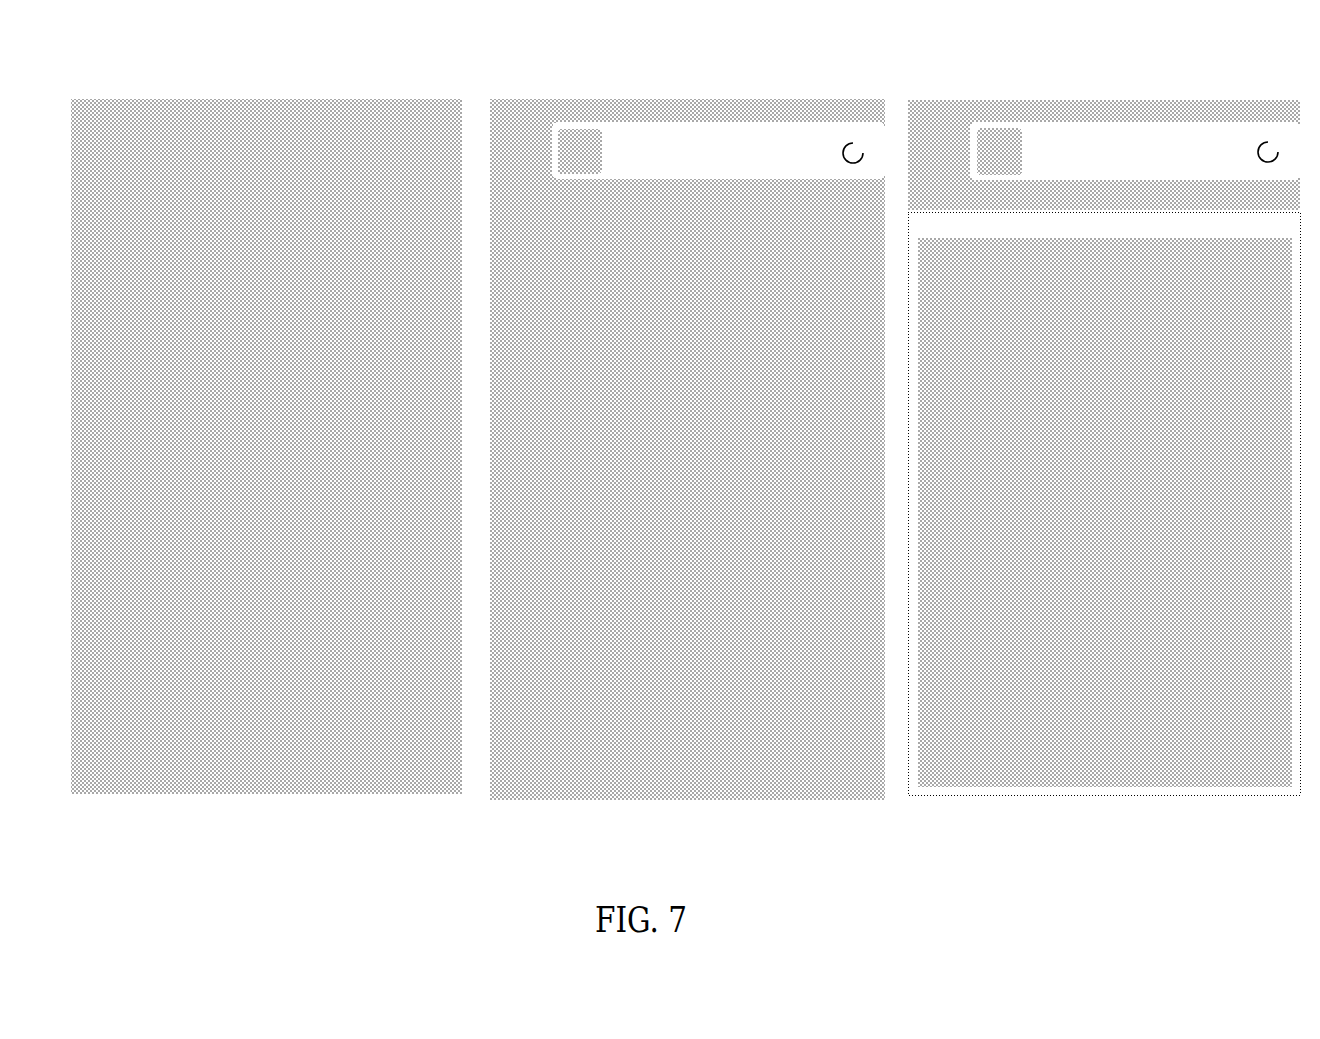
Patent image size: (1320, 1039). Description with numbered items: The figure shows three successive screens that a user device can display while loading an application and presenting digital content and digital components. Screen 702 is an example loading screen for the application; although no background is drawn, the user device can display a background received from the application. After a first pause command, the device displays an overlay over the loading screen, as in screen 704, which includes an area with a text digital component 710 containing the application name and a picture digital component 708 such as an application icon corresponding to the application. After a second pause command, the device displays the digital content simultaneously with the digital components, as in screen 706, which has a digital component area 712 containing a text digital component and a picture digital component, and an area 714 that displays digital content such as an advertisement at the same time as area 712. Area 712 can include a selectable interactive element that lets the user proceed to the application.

The screen 702 is at (266, 92).
The screen 704 is at (687, 404).
The screen 706 is at (1104, 436).
The application icon 708 is at (577, 140).
The text digital component 710 is at (638, 122).
The digital component area 712 is at (1006, 133).
The area 714 is at (1088, 748).